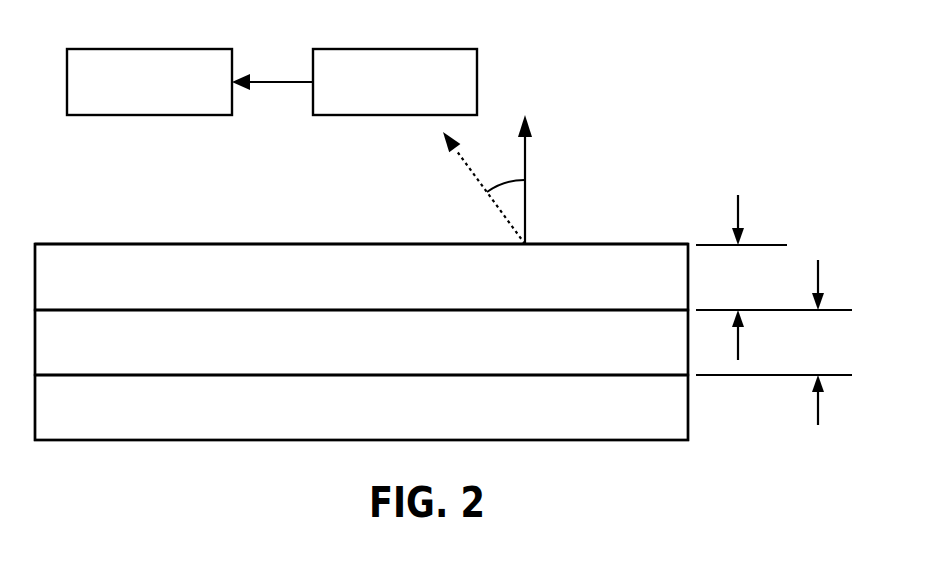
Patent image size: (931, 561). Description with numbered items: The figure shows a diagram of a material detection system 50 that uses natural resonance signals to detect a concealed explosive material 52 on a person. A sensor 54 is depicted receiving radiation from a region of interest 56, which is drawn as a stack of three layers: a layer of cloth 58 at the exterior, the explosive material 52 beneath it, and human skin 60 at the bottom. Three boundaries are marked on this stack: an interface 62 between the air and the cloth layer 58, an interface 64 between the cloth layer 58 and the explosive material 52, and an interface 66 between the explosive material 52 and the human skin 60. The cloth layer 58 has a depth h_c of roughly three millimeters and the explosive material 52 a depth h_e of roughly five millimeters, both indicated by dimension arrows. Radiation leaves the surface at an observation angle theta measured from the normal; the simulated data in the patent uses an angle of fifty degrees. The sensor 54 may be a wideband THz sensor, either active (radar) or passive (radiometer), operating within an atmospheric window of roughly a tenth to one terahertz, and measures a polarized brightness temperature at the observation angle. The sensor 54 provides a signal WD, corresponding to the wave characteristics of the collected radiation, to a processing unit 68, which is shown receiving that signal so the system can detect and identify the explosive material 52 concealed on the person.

The material detection system 50 is at (808, 26).
The explosive material 52 is at (518, 353).
The sensor 54 is at (477, 63).
The region of interest 56 is at (92, 203).
The layer of cloth 58 is at (478, 289).
The human skin 60 is at (470, 418).
The interface between air and cloth layer 62 is at (558, 244).
The interface between cloth layer and explosive material 64 is at (558, 310).
The interface between explosive material and human skin 66 is at (558, 375).
The processing unit 68 is at (201, 115).